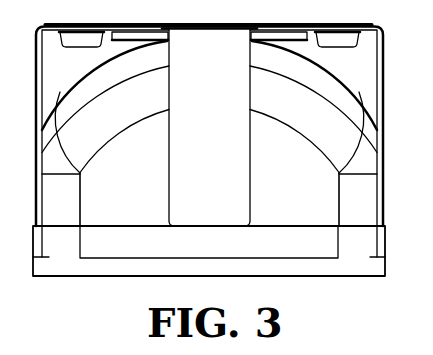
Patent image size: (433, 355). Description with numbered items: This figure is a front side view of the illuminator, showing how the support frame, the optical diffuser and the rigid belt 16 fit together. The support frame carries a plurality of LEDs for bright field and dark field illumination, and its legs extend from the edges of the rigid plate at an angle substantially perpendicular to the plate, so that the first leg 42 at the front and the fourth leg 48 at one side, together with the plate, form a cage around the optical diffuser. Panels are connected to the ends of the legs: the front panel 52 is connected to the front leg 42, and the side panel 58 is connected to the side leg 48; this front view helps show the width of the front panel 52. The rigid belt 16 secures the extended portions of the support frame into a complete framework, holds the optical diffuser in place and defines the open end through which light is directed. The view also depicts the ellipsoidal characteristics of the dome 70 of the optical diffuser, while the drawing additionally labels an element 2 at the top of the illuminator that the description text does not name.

The top plate / cover 2 is at (342, 26).
The rigid belt 16 is at (80, 276).
The first leg 42 is at (218, 160).
The fourth leg 48 is at (384, 86).
The front panel 52 is at (292, 243).
The side panel 58 is at (386, 242).
The dome 70 is at (113, 100).